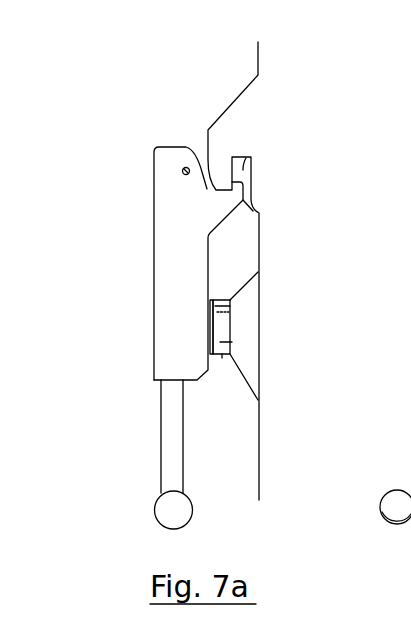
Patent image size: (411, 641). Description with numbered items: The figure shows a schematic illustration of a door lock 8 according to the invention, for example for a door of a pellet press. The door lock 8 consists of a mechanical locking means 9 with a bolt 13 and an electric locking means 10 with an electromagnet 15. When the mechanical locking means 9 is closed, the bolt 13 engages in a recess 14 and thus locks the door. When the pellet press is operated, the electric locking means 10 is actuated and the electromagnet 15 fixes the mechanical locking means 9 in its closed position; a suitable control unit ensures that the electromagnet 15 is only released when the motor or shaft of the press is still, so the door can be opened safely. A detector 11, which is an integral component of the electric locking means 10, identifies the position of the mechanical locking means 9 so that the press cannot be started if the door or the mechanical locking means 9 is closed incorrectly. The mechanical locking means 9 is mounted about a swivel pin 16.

The door lock 8 is at (107, 124).
The mechanical locking means 9 is at (190, 212).
The electric locking means 10 is at (236, 330).
The detector 11 is at (232, 303).
The bolt 13 is at (250, 200).
The recess 14 is at (250, 157).
The electromagnet 15 is at (232, 342).
The swivel pin 16 is at (182, 172).